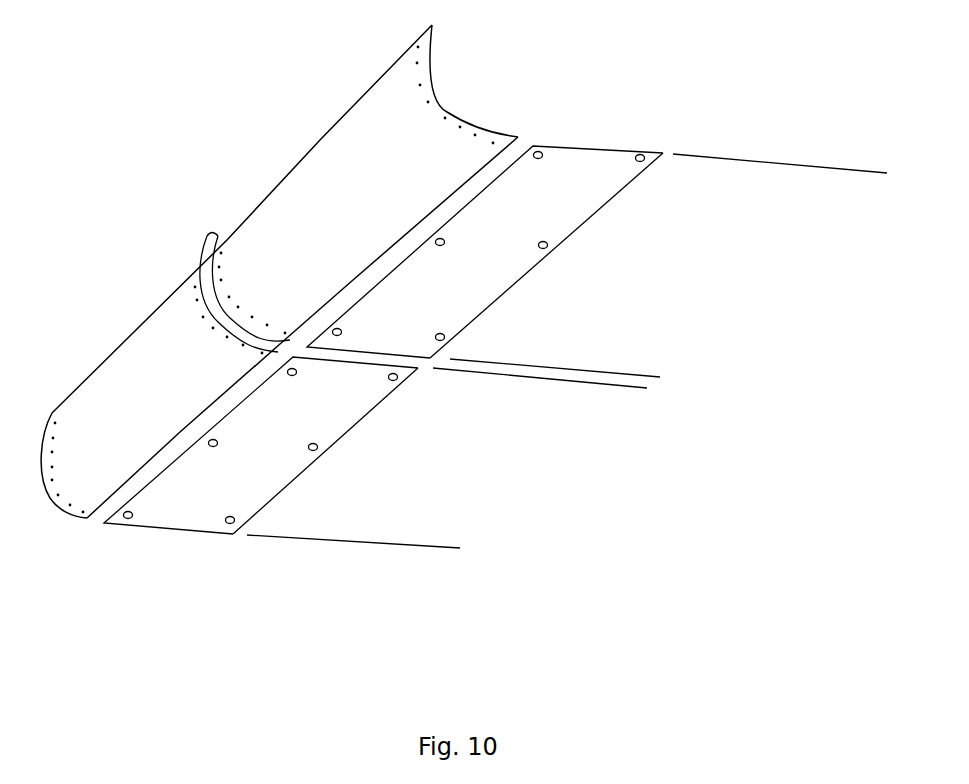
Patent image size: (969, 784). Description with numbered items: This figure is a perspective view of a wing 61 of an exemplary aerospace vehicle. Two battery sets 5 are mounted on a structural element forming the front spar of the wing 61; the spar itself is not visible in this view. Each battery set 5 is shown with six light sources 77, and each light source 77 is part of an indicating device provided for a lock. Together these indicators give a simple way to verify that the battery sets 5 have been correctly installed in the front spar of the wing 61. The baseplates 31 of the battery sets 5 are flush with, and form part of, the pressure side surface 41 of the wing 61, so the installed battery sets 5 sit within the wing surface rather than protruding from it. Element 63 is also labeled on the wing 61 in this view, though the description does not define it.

The wing 61 is at (627, 98).
The rib flange of shell 63 is at (252, 246).
The battery set 5 is at (596, 262).
The baseplate 31 is at (586, 208).
The pressure side surface 41 is at (751, 217).
The light source 77 is at (646, 153).